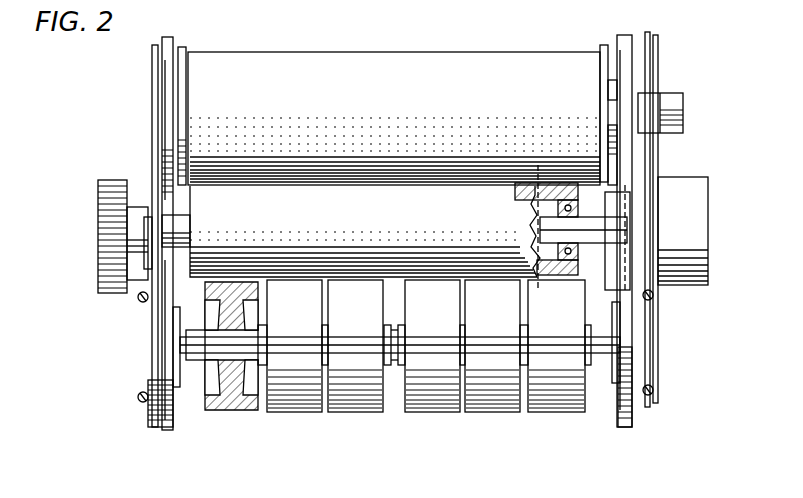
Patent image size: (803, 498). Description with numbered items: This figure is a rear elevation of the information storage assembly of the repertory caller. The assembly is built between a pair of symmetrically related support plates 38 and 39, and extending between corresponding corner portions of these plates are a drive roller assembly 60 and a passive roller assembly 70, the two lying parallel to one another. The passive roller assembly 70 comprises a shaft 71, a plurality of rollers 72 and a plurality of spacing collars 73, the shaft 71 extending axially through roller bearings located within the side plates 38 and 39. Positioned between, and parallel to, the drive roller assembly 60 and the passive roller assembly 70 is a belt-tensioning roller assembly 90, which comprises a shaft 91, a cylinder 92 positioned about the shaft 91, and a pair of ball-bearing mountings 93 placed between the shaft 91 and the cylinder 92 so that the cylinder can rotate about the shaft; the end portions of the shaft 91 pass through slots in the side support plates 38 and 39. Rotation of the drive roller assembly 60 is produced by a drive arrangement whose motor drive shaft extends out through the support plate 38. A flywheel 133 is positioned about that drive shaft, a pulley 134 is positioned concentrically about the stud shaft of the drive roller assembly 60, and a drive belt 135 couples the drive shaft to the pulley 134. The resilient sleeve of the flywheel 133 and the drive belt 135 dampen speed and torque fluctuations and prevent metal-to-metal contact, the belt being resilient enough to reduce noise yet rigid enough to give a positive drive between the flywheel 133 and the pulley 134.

The support plate 38 is at (633, 55).
The support plate 39 is at (152, 97).
The drive roller assembly 60 is at (328, 52).
The passive roller assembly 70 is at (295, 418).
The shaft 71 is at (393, 337).
The rollers 72 is at (240, 408).
The spacing collars 73 is at (402, 362).
The belt-tensioning roller assembly 90 is at (186, 260).
The shaft 91 is at (175, 223).
The cylinder 92 is at (548, 190).
The ball-bearing mountings 93 is at (545, 240).
The flywheel 133 is at (700, 222).
The pulley 134 is at (660, 160).
The drive belt 135 is at (655, 70).